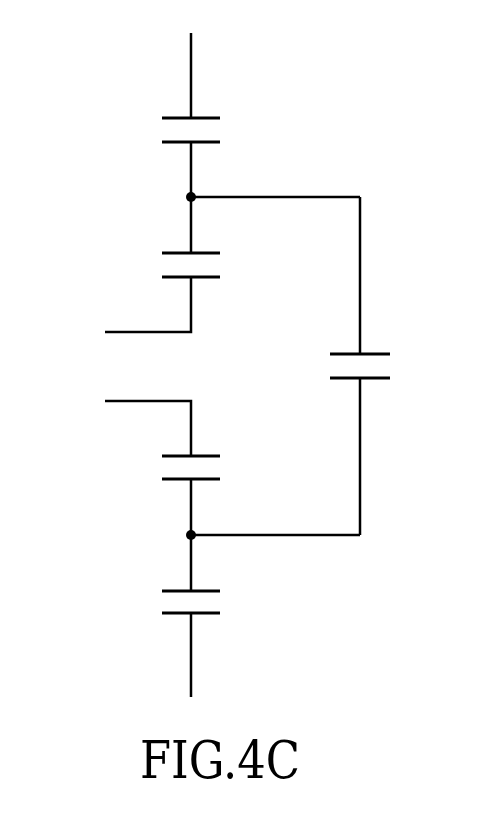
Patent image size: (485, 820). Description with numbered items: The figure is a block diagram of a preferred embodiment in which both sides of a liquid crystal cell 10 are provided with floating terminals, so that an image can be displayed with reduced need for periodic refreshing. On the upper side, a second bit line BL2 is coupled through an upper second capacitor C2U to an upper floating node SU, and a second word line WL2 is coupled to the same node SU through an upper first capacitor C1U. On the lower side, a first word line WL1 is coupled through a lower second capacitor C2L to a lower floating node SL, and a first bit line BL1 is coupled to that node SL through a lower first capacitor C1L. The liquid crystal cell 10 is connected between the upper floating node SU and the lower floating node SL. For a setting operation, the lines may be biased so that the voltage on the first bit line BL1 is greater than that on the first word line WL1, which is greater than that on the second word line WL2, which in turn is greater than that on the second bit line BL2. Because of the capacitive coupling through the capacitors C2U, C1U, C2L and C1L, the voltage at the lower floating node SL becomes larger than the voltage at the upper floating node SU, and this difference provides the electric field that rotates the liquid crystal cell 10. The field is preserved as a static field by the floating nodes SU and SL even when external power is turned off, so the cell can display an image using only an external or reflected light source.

The liquid crystal cell 10 is at (385, 368).
The second bit line BL2 is at (197, 60).
The first bit line BL1 is at (196, 671).
The second word line WL2 is at (119, 309).
The first word line WL1 is at (119, 422).
The upper second capacitor C2U is at (178, 114).
The upper first capacitor C1U is at (178, 248).
The lower second capacitor C2L is at (178, 450).
The lower first capacitor C1L is at (178, 585).
The upper floating node SU is at (255, 197).
The lower floating node SL is at (255, 535).